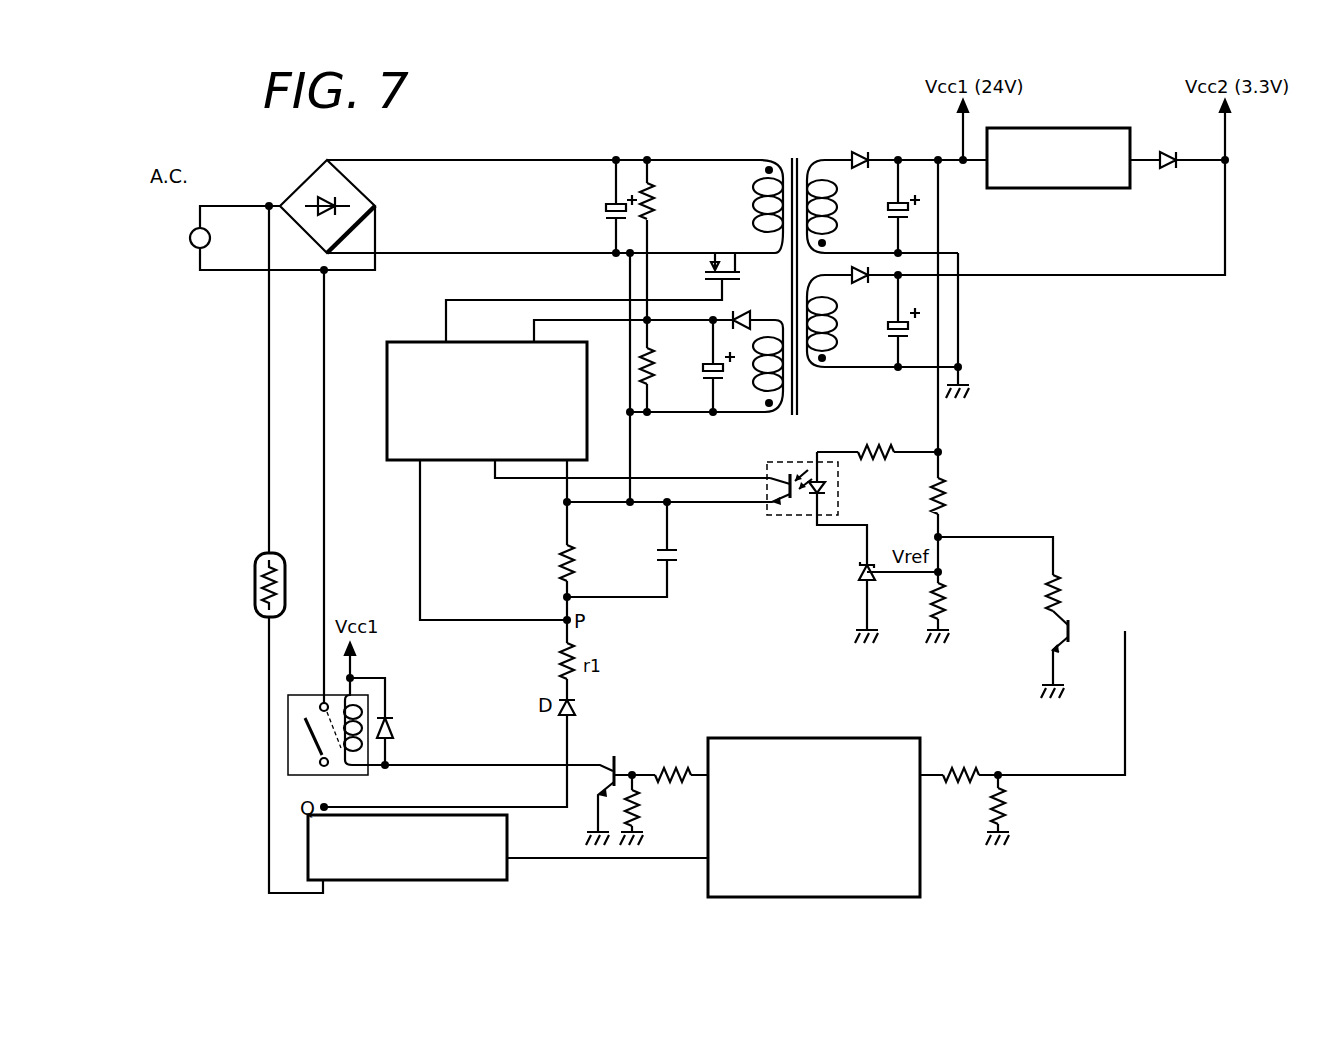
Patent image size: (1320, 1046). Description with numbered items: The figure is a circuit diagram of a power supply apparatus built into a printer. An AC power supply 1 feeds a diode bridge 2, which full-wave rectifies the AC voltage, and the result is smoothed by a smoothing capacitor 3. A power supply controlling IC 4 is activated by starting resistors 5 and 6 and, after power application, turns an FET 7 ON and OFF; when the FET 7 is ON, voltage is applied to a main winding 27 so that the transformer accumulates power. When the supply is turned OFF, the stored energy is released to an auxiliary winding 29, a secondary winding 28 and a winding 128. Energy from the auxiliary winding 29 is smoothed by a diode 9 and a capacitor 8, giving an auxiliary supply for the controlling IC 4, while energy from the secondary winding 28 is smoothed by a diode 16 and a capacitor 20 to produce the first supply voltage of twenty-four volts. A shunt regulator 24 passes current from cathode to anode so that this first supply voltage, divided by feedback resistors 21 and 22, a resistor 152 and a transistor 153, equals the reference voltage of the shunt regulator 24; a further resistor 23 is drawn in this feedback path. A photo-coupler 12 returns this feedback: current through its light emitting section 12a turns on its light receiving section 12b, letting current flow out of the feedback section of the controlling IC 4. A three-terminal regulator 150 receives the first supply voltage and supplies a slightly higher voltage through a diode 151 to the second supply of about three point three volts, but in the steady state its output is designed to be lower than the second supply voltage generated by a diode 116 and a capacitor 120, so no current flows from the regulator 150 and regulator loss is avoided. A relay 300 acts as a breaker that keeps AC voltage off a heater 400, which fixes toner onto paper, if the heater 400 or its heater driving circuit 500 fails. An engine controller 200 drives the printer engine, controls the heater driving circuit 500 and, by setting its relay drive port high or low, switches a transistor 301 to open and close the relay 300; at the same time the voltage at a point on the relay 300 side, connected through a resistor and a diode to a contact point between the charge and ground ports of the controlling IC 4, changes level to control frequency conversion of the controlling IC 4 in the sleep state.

The AC power supply 1 is at (190, 232).
The diode bridge 2 is at (301, 184).
The smoothing capacitor 3 is at (607, 208).
The power supply controlling IC 4 is at (413, 342).
The power-supply controlling IC starting resistor 5 is at (654, 207).
The power-supply controlling IC starting resistor 6 is at (654, 366).
The FET 7 is at (742, 276).
The capacitor 8 is at (705, 379).
The diode 9 is at (752, 315).
The photo-coupler 12 is at (797, 501).
The light emitting section 12a is at (826, 490).
The light receiving section 12b is at (769, 487).
The diode 16 is at (860, 152).
The capacitor 20 is at (890, 210).
The feedback resistor 21 is at (932, 494).
The feedback resistor 22 is at (946, 600).
The resistor 23 is at (869, 446).
The shunt regulator 24 is at (859, 574).
The main winding 27 is at (757, 214).
The secondary winding 28 is at (833, 226).
The auxiliary winding 29 is at (764, 406).
The diode 116 is at (862, 271).
The capacitor 120 is at (890, 326).
The winding 128 is at (833, 342).
The three-terminal regulator 150 is at (1090, 128).
The diode 151 is at (1167, 152).
The resistor 152 is at (1062, 598).
The transistor 153 is at (1058, 632).
The engine controller 200 is at (905, 738).
The relay 300 is at (345, 775).
The transistor 301 is at (603, 763).
The heater 400 is at (285, 553).
The heater driving circuit 500 is at (507, 877).